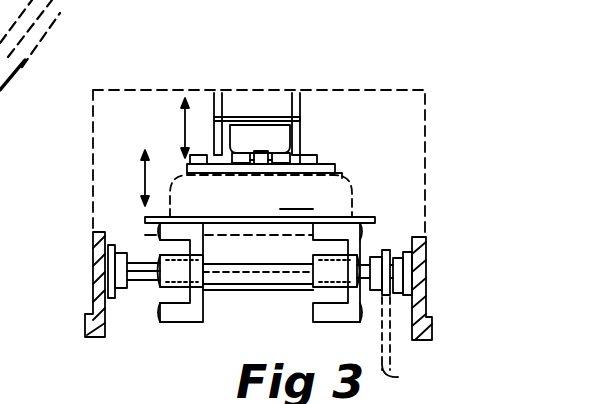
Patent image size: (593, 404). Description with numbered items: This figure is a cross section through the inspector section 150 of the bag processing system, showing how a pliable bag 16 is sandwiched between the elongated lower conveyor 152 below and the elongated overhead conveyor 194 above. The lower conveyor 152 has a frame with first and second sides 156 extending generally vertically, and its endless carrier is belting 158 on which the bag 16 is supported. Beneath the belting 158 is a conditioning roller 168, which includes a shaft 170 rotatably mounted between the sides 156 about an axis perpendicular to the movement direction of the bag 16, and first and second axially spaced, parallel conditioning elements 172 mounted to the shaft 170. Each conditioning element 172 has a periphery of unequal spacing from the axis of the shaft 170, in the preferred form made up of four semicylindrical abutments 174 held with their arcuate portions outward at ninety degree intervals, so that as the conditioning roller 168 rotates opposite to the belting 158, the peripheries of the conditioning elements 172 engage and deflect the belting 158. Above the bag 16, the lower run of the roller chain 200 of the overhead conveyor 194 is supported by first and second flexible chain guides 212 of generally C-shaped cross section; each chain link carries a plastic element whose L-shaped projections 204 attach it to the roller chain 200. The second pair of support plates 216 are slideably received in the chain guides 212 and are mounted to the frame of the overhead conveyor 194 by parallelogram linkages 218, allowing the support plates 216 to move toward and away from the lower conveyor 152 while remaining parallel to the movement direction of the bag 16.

The pliable bag 16 is at (261, 196).
The inspector section 150 is at (166, 136).
The lower conveyor 152 is at (129, 224).
The sides 156 is at (92, 298).
The belting 158 is at (370, 231).
The conditioning roller 168 is at (233, 306).
The shaft 170 is at (252, 284).
The conditioning elements 172 is at (167, 318).
The semicylindrical abutments 174 is at (167, 290).
The overhead conveyor 194 is at (338, 169).
The roller chain 200 is at (260, 150).
The L-shaped projections 204 is at (293, 147).
The chain guides 212 is at (202, 155).
The support plates 216 is at (299, 156).
The parallelogram linkages 218 is at (224, 101).